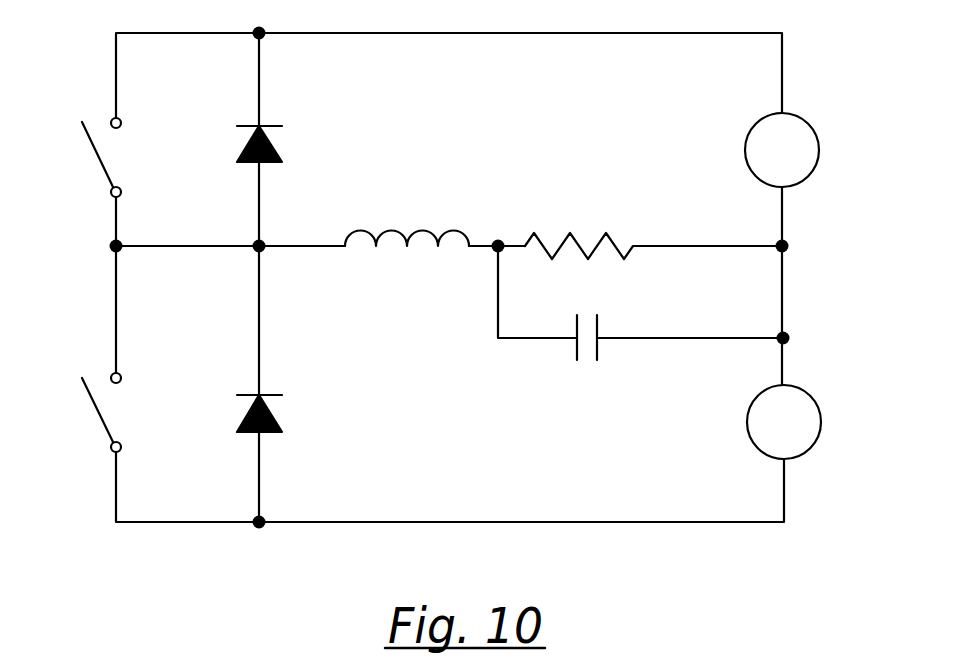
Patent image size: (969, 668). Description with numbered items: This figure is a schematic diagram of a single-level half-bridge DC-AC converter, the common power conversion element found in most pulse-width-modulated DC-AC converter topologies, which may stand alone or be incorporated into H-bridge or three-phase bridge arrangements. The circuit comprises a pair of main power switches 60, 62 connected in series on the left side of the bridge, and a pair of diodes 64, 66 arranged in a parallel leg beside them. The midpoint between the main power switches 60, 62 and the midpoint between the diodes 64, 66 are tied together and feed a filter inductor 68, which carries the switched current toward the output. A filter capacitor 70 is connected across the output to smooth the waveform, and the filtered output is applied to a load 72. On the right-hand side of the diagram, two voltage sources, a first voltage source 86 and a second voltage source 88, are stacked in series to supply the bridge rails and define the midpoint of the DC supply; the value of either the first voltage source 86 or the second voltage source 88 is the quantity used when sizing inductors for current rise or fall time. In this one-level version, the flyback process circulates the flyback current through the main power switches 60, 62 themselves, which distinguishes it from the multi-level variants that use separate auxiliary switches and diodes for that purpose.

The main power switch 60 is at (97, 155).
The main power switch 62 is at (97, 410).
The diode 64 is at (270, 125).
The diode 66 is at (270, 394).
The filter inductor 68 is at (425, 231).
The filter capacitor 70 is at (577, 352).
The load 72 is at (572, 233).
The voltage source V1 86 is at (819, 145).
The voltage source V2 88 is at (821, 408).